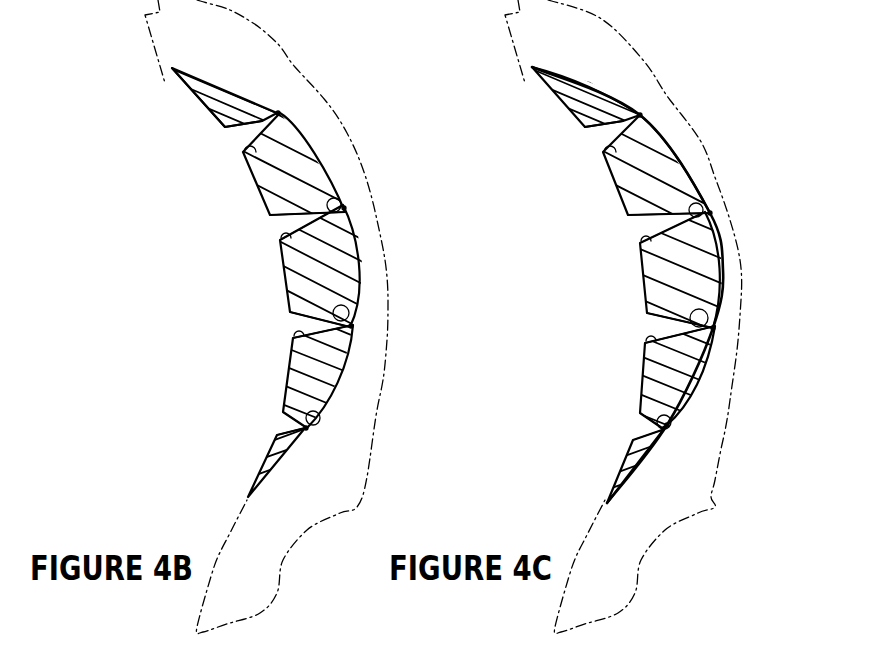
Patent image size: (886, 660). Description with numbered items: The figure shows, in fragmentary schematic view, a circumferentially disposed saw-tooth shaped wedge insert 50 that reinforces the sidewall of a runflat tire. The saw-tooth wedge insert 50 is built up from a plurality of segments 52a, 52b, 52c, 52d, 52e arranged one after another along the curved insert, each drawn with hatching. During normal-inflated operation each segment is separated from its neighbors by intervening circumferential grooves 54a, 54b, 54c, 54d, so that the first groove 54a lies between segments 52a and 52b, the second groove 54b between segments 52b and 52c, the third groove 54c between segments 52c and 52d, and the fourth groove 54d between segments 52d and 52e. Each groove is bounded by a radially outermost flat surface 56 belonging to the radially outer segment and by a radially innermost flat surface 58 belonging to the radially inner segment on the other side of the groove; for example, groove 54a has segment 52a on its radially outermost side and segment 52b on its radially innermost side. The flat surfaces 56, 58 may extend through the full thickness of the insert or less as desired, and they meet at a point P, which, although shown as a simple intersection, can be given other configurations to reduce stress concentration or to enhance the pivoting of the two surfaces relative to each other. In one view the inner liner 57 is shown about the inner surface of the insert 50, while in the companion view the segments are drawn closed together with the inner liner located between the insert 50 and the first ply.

In FIG. 4B, the saw-tooth shaped wedge insert 50 is at (230, 294).
In FIG. 4C, the saw-tooth shaped wedge insert 50 is at (564, 288).
In FIG. 4B, the segment 52a is at (222, 100).
In FIG. 4C, the segment 52a is at (581, 92).
In FIG. 4B, the segment 52b is at (278, 175).
In FIG. 4C, the segment 52b is at (645, 190).
In FIG. 4B, the segment 52c is at (300, 258).
In FIG. 4C, the segment 52c is at (669, 267).
In FIG. 4B, the segment 52d is at (303, 380).
In FIG. 4C, the segment 52d is at (657, 367).
In FIG. 4B, the segment 52e is at (275, 462).
In FIG. 4C, the segment 52e is at (630, 459).
In FIG. 4B, the circumferential groove 54a is at (248, 130).
In FIG. 4C, the circumferential groove 54a is at (564, 127).
In FIG. 4B, the circumferential groove 54b is at (293, 223).
In FIG. 4C, the circumferential groove 54b is at (630, 230).
In FIG. 4B, the circumferential groove 54c is at (307, 325).
In FIG. 4C, the circumferential groove 54c is at (648, 323).
In FIG. 4B, the circumferential groove 54d is at (288, 423).
In FIG. 4C, the circumferential groove 54d is at (606, 420).
In FIG. 4B, the radially outermost flat surface 56 is at (255, 115).
In FIG. 4C, the radially outermost flat surface 56 is at (701, 232).
In FIG. 4B, the inner liner 57 is at (201, 97).
In FIG. 4B, the radially innermost flat surface 58 is at (246, 157).
In FIG. 4C, the radially innermost flat surface 58 is at (675, 312).
In FIG. 4B, the point P is at (270, 113).
In FIG. 4C, the point P is at (705, 261).